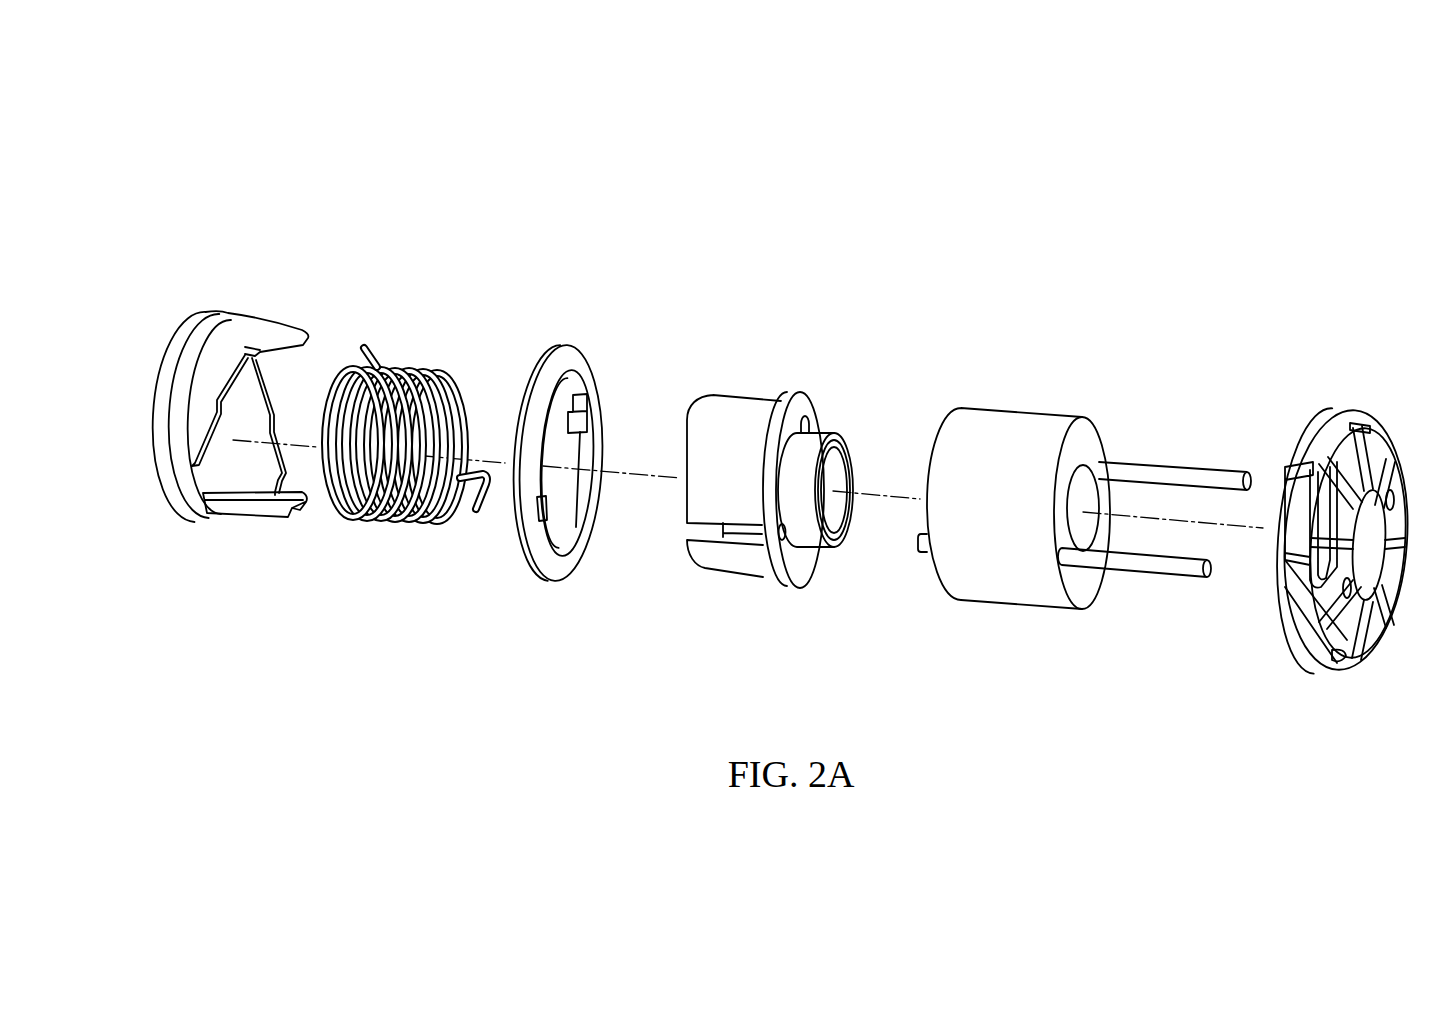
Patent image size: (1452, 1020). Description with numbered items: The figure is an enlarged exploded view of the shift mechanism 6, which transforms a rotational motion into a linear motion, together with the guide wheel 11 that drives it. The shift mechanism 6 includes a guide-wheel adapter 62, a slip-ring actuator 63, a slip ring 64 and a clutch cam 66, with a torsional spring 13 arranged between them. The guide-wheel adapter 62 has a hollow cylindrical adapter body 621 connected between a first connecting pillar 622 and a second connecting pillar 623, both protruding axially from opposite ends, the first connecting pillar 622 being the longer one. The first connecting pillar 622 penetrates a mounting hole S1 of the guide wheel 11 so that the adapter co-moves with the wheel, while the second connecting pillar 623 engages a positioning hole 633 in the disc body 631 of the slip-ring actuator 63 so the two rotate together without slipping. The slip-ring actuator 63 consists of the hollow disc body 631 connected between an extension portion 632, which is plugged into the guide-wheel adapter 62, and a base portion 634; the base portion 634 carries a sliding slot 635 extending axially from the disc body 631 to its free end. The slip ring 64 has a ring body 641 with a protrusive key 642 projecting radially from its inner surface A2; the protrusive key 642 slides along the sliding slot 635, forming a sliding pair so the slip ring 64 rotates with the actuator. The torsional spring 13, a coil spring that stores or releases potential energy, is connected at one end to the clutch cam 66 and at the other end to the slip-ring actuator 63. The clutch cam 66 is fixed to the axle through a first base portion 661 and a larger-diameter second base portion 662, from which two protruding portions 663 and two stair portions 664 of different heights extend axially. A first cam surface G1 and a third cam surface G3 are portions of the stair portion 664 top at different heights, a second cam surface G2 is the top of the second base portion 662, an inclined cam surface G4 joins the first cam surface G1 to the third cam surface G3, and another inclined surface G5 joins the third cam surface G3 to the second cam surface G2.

The shift mechanism 6 is at (158, 109).
The clutch cam 66 is at (217, 412).
The first base portion 661 is at (167, 497).
The second base portion 662 is at (193, 515).
The protruding portion 663 is at (265, 328).
The stair portion 664 is at (218, 375).
The first cam surface G1 is at (245, 362).
The second cam surface G2 is at (190, 478).
The third cam surface G3 is at (217, 412).
The inclined cam surface G4 is at (240, 394).
The inclined cam surface G5 is at (205, 442).
The torsional spring 13 is at (425, 342).
The slip ring 64 is at (593, 422).
The ring body 641 is at (580, 365).
The protrusive key 642 is at (587, 415).
The inner surface A2 is at (587, 457).
The slip-ring actuator 63 is at (766, 467).
The disc body 631 is at (777, 573).
The extension portion 632 is at (813, 450).
The positioning hole 633 is at (785, 533).
The base portion 634 is at (742, 410).
The sliding slot 635 is at (710, 530).
The guide-wheel adapter 62 is at (1067, 500).
The adapter body 621 is at (1013, 590).
The first connecting pillar 622 is at (1137, 567).
The second connecting pillar 623 is at (917, 550).
The guide wheel 11 is at (1359, 494).
The mounting hole S1 is at (1397, 503).